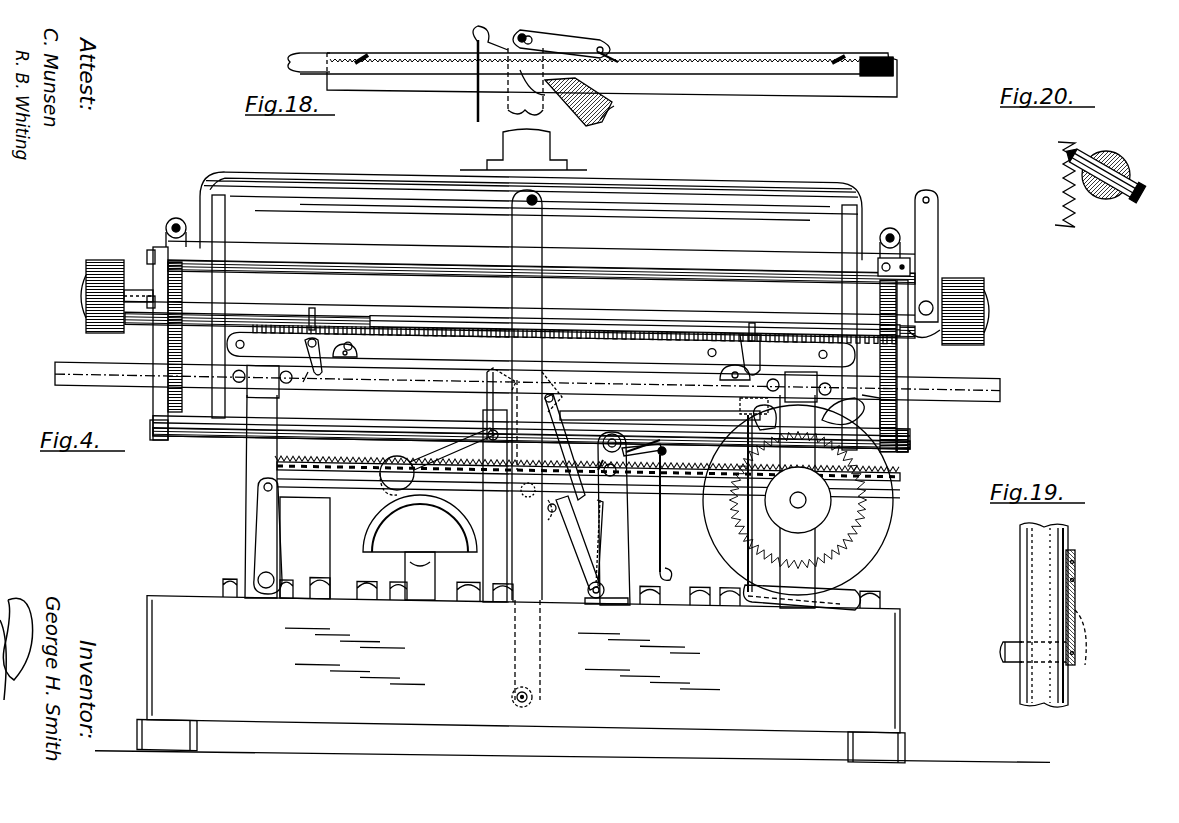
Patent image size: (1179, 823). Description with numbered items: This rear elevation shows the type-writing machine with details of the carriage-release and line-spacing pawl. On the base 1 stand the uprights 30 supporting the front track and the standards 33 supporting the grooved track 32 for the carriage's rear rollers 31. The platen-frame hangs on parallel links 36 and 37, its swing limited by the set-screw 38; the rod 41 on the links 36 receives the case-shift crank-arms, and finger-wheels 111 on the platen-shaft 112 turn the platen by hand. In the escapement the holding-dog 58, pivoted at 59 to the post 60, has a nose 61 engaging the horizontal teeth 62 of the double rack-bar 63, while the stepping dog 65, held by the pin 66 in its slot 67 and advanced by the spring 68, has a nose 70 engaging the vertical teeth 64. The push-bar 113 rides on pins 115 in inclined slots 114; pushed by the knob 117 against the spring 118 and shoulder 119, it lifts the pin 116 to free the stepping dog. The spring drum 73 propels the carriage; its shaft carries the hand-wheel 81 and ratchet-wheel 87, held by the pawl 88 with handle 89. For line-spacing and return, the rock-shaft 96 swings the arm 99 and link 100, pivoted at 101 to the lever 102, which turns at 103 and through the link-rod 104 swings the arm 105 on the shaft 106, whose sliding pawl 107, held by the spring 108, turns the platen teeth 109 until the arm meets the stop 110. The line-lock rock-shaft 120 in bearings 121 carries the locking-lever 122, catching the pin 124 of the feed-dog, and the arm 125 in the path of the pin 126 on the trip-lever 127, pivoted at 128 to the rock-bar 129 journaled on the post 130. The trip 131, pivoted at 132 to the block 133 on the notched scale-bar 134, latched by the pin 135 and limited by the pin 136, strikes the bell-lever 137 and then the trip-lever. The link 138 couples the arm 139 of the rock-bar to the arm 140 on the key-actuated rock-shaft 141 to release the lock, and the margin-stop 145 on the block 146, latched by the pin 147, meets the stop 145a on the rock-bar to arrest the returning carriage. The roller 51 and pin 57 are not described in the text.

In FIG. 4, the base frame 1 is at (572, 681).
In FIG. 4, the uprights 30 is at (551, 573).
In FIG. 4, the antifriction-rollers 31 is at (718, 372).
In FIG. 4, the grooved track 32 is at (413, 390).
In FIG. 4, the standards 33 is at (530, 501).
In FIG. 4, the parallel link 36 is at (162, 442).
In FIG. 4, the parallel link 37 is at (155, 272).
In FIG. 4, the set-screw 38 is at (185, 222).
In FIG. 4, the rod 41 is at (212, 440).
In FIG. 4, the roller 51 is at (358, 358).
In FIG. 18, the pin 57 is at (478, 104).
In FIG. 4, the pin 57 is at (673, 517).
In FIG. 18, the feed-dog 58 is at (592, 114).
In FIG. 4, the feed-dog 58 is at (667, 452).
In FIG. 4, the pivot 59 is at (628, 478).
In FIG. 18, the post 60 is at (523, 109).
In FIG. 4, the post 60 is at (614, 518).
In FIG. 18, the nose 61 is at (610, 110).
In FIG. 4, the nose 61 is at (555, 521).
In FIG. 4, the horizontally-projecting teeth 62 is at (587, 479).
In FIG. 4, the double rack-bar 63 is at (385, 478).
In FIG. 4, the vertically-projecting teeth 64 is at (397, 469).
In FIG. 18, the stepping dog 65 is at (604, 40).
In FIG. 4, the stepping dog 65 is at (612, 433).
In FIG. 18, the pin 66 is at (561, 44).
In FIG. 4, the pin 66 is at (642, 435).
In FIG. 18, the slot 67 is at (530, 30).
In FIG. 18, the spring 68 is at (490, 30).
In FIG. 4, the nose 70 is at (527, 540).
In FIG. 4, the drum 73 is at (875, 543).
In FIG. 4, the hand-wheel 81 is at (798, 500).
In FIG. 4, the ratchet-wheel 87 is at (807, 499).
In FIG. 4, the pawl 88 is at (835, 420).
In FIG. 4, the handle 89 is at (885, 412).
In FIG. 4, the rock-shaft 96 is at (264, 586).
In FIG. 4, the vertical arm 99 is at (258, 527).
In FIG. 4, the link 100 is at (305, 488).
In FIG. 4, the pivot 101 is at (531, 483).
In FIG. 4, the lever 102 is at (527, 395).
In FIG. 4, the pivot 103 is at (533, 697).
In FIG. 4, the link-rod 104 is at (735, 188).
In FIG. 4, the arm 105 is at (938, 240).
In FIG. 20, the shaft 106 is at (1125, 162).
In FIG. 19, the shaft 106 is at (1030, 563).
In FIG. 4, the shaft 106 is at (924, 342).
In FIG. 20, the line-spacing pawl 107 is at (1100, 160).
In FIG. 19, the line-spacing pawl 107 is at (1010, 665).
In FIG. 20, the spring 108 is at (1125, 192).
In FIG. 19, the spring 108 is at (1076, 604).
In FIG. 20, the teeth 109 is at (1070, 212).
In FIG. 4, the stop 110 is at (912, 270).
In FIG. 4, the finger-wheel 111 is at (985, 350).
In FIG. 4, the platen-shaft 112 is at (142, 304).
In FIG. 18, the carriage-release 113 is at (327, 53).
In FIG. 18, the inclined slots 114 is at (365, 72).
In FIG. 18, the pins 115 is at (365, 58).
In FIG. 18, the pin 116 is at (618, 58).
In FIG. 18, the knob 117 is at (293, 62).
In FIG. 18, the spring 118 is at (878, 57).
In FIG. 18, the shoulder 119 is at (897, 68).
In FIG. 4, the rock-shaft 120 is at (606, 600).
In FIG. 4, the bearings 121 is at (592, 598).
In FIG. 4, the locking-lever 122 is at (608, 548).
In FIG. 4, the pin 124 is at (574, 543).
In FIG. 4, the arm 125 is at (582, 555).
In FIG. 4, the pin 126 is at (590, 510).
In FIG. 4, the trip-lever 127 is at (548, 512).
In FIG. 4, the pivot 128 is at (556, 406).
In FIG. 4, the rock-bar 129 is at (660, 408).
In FIG. 4, the post 130 is at (488, 545).
In FIG. 4, the trip 131 is at (296, 382).
In FIG. 4, the pivot 132 is at (305, 348).
In FIG. 4, the adjustable block 133 is at (330, 330).
In FIG. 4, the scale-bar 134 is at (395, 338).
In FIG. 4, the latch-pin 135 is at (312, 308).
In FIG. 4, the pin 136 is at (326, 384).
In FIG. 4, the bell-lever 137 is at (485, 410).
In FIG. 4, the link 138 is at (746, 460).
In FIG. 4, the arm 139 is at (740, 405).
In FIG. 4, the arm 140 is at (798, 604).
In FIG. 4, the rock-shaft 141 is at (860, 598).
In FIG. 4, the margin-stop 145 is at (799, 384).
In FIG. 4, the stop 145a is at (521, 395).
In FIG. 4, the block 146 is at (755, 345).
In FIG. 4, the latch-pin 147 is at (752, 323).